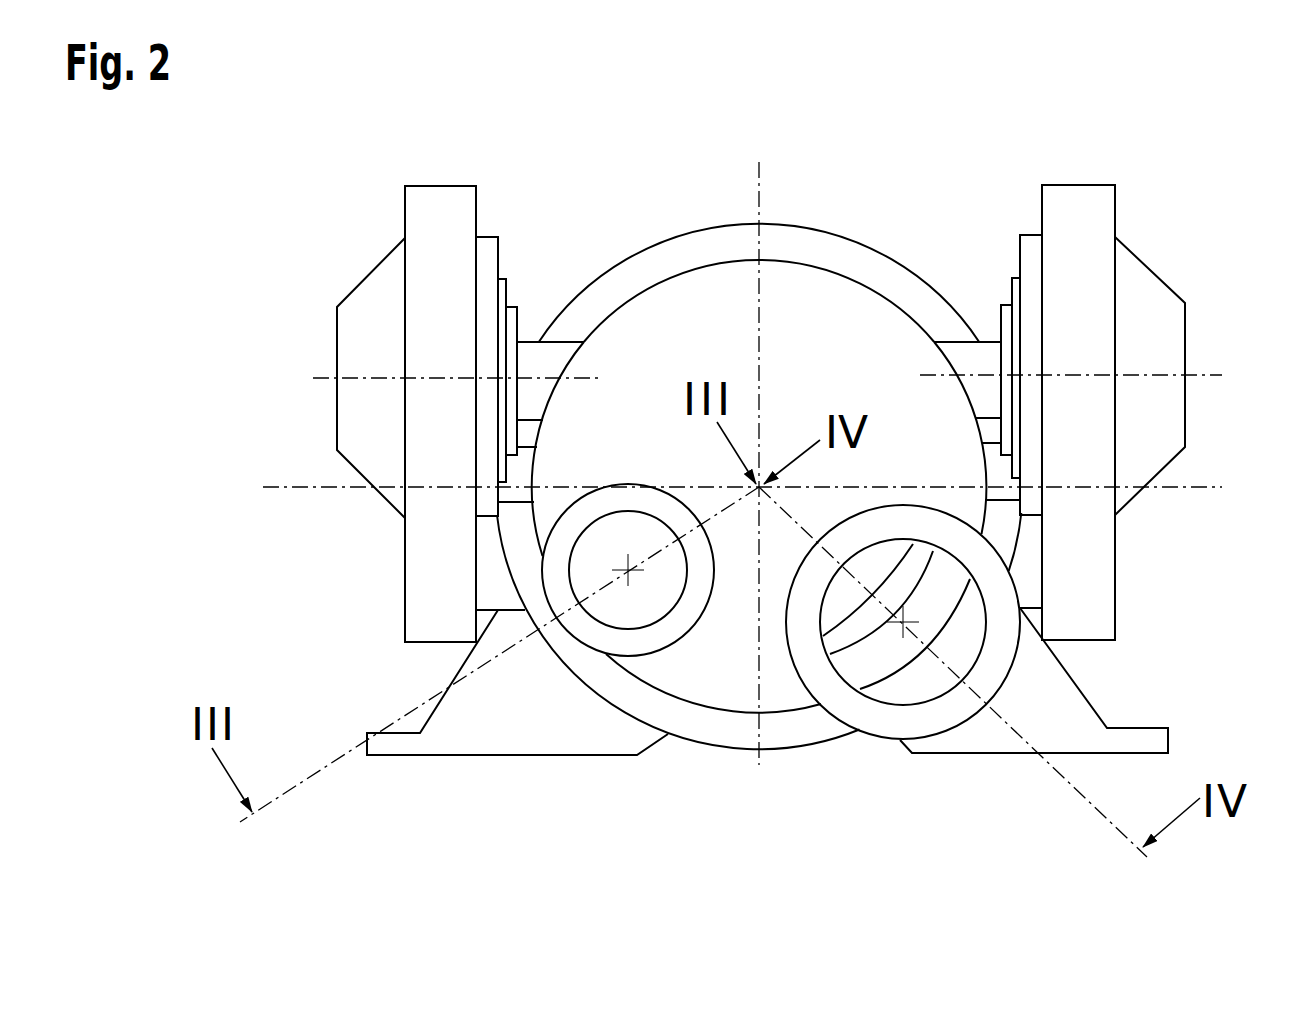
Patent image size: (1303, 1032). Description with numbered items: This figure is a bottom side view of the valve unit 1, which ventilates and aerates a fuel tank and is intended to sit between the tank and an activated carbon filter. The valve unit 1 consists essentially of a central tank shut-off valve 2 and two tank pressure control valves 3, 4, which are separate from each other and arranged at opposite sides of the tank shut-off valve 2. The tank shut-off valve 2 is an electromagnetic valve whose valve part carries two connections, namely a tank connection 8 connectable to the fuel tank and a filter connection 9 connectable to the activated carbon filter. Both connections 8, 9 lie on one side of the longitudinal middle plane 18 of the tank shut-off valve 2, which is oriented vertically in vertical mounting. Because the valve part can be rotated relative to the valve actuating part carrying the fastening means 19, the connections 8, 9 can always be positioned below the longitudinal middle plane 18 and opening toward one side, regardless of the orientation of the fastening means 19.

The valve unit 1 is at (920, 200).
The tank shut-off valve 2 is at (823, 327).
The tank pressure control valve 3 is at (370, 310).
The tank pressure control valve 4 is at (1148, 302).
The tank connection 8 is at (613, 600).
The filter connection 9 is at (930, 675).
The longitudinal middle plane 18 is at (318, 488).
The fastening means 19 is at (490, 717).